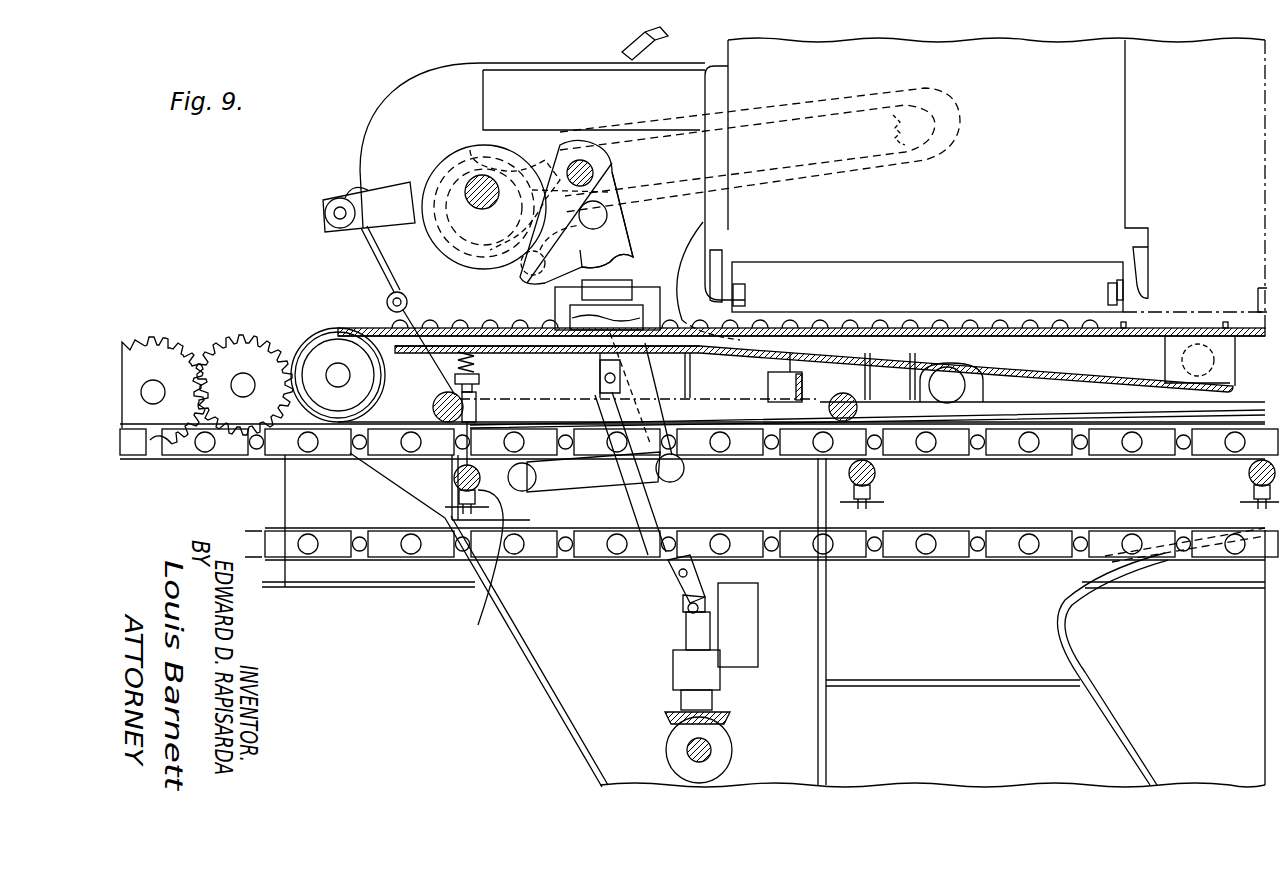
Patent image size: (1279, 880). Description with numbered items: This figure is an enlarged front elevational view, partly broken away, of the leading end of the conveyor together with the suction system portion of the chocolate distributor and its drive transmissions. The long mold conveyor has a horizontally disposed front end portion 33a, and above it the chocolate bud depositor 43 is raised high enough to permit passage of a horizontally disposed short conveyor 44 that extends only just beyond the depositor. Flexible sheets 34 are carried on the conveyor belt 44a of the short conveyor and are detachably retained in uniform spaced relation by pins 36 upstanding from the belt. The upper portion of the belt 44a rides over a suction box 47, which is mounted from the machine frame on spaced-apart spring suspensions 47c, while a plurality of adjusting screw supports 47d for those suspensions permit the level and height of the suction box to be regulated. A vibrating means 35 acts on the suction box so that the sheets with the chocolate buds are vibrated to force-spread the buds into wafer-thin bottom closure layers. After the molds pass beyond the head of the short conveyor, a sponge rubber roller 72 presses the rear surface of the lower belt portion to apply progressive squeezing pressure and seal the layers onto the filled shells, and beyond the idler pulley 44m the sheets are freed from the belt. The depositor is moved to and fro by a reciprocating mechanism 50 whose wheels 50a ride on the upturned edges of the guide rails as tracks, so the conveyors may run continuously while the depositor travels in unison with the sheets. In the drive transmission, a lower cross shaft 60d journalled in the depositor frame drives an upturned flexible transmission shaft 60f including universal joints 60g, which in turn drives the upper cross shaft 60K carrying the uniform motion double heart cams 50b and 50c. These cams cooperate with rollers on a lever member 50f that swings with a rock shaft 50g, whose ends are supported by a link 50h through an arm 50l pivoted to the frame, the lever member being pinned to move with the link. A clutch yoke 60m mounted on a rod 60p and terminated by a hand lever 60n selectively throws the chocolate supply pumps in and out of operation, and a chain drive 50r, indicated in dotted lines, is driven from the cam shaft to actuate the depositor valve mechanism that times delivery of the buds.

The depositor reciprocating mechanism 50 is at (384, 85).
The hand lever 60n is at (628, 48).
The chocolate bud depositor 43 is at (1100, 140).
The chain drive 50r is at (800, 118).
The double heart cam 50c is at (445, 170).
The upper cross shaft 60K is at (495, 185).
The double heart cam 50b is at (560, 150).
The rock shaft 50g is at (596, 170).
The lever member 50f is at (605, 192).
The link 50h is at (632, 250).
The clutch yoke 60m is at (355, 192).
The rod 60p is at (338, 214).
The short conveyor 44 is at (360, 325).
The pins 36 is at (508, 328).
The flexible sheets 34 is at (488, 326).
The conveyor belt 44a is at (1172, 325).
The wheels 50a is at (947, 378).
The suction box 47 is at (530, 340).
The spring suspensions 47c is at (480, 378).
The sponge rubber roller 72 is at (440, 398).
The adjusting screw supports 47d is at (1182, 362).
The flexible transmission shaft 60f is at (650, 402).
The arm 50l is at (568, 478).
The vibrating means 35 is at (792, 410).
The idler pulley 44m is at (858, 407).
The front end portion 33a is at (256, 460).
The universal joints 60g is at (680, 590).
The lower cross shaft 60d is at (712, 750).